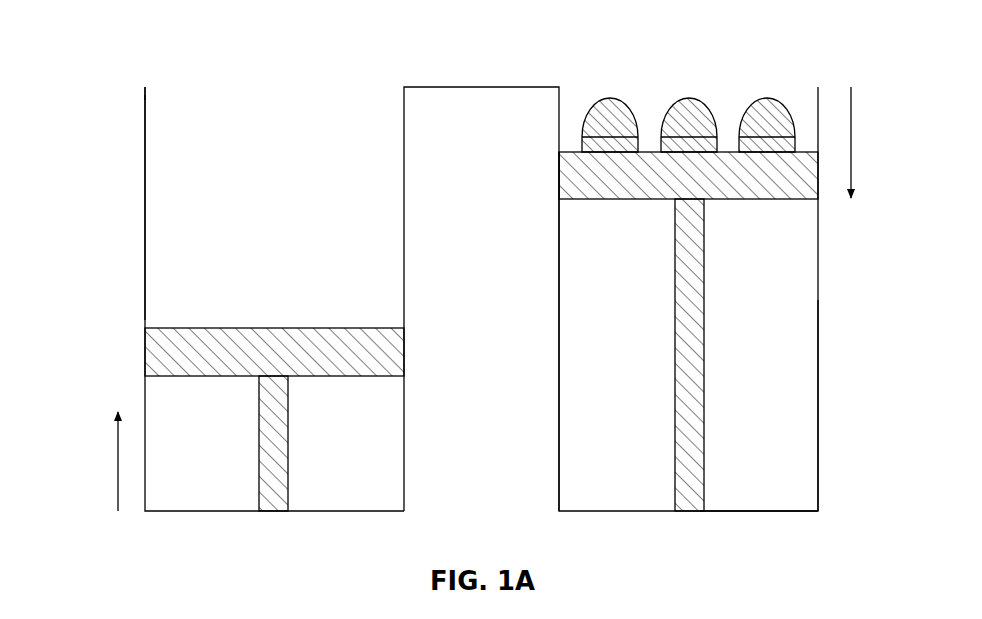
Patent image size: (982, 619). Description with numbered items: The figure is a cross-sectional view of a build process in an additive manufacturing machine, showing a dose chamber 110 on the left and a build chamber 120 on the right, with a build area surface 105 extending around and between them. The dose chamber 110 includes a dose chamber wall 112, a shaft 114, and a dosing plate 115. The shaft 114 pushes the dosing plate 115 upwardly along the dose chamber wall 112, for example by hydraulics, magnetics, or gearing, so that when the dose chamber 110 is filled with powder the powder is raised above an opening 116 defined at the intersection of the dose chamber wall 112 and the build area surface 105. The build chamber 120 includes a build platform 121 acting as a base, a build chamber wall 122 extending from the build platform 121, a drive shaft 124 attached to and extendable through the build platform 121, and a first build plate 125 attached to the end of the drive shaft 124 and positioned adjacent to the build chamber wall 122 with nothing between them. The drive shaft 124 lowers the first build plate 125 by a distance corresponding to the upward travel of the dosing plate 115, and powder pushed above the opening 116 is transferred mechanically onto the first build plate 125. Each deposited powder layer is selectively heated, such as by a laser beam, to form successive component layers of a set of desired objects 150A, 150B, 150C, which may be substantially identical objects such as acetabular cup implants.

The dose chamber 110 is at (120, 58).
The dose chamber wall 112 is at (145, 137).
The opening 116 is at (146, 88).
The dosing plate 115 is at (160, 347).
The shaft 114 is at (273, 443).
The build area surface 105 is at (418, 87).
The build chamber 120 is at (583, 60).
The build platform 121 is at (810, 512).
The build chamber wall 122 is at (818, 410).
The first build plate 125 is at (803, 188).
The drive shaft 124 is at (692, 273).
The desired object 150A is at (610, 110).
The desired object 150B is at (690, 110).
The desired object 150C is at (770, 112).